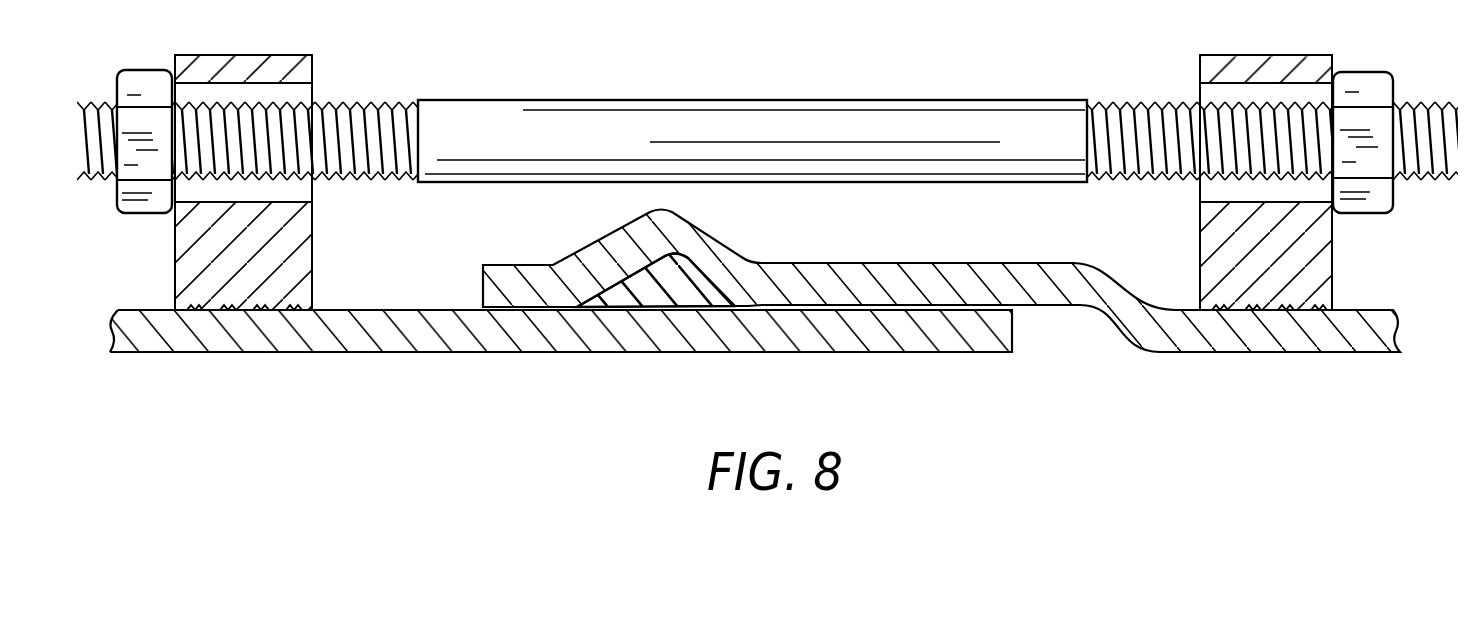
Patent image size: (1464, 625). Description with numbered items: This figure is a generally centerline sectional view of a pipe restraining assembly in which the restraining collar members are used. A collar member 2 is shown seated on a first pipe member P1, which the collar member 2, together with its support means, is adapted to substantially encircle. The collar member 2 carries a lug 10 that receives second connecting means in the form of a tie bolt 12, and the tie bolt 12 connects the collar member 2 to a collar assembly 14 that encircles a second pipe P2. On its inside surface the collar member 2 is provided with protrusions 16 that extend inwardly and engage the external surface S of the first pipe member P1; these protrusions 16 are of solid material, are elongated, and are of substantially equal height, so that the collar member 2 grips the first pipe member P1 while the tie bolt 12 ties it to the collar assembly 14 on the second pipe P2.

The collar member 2 is at (261, 200).
The lug 10 is at (243, 200).
The tie bolt 12 is at (743, 100).
The collar assembly 14 is at (1230, 55).
The protrusion 16 is at (297, 312).
The external surface S is at (157, 308).
The first pipe member P1 is at (561, 310).
The second pipe P2 is at (1053, 263).